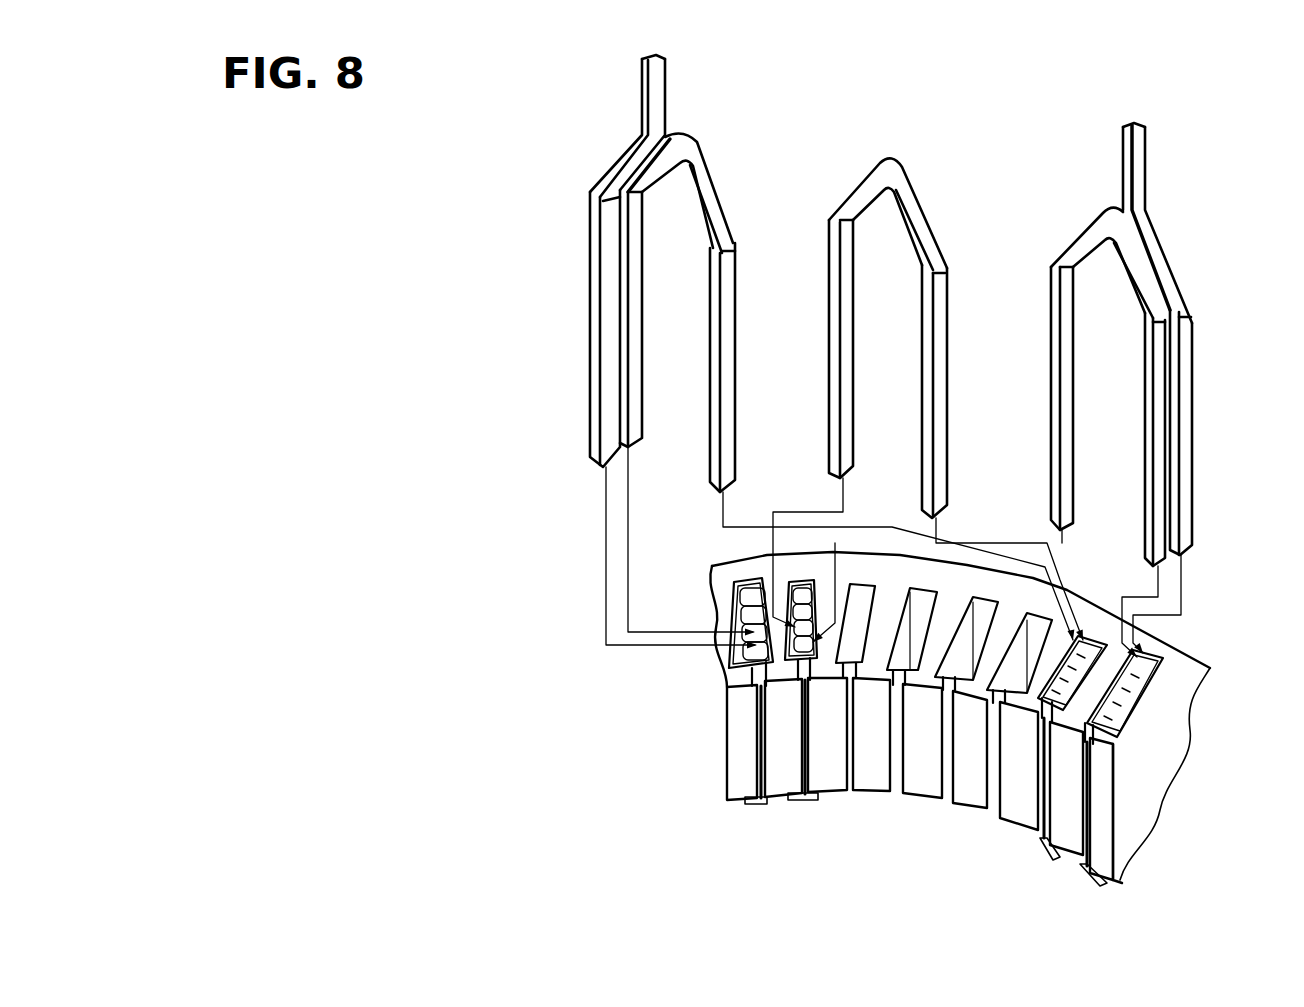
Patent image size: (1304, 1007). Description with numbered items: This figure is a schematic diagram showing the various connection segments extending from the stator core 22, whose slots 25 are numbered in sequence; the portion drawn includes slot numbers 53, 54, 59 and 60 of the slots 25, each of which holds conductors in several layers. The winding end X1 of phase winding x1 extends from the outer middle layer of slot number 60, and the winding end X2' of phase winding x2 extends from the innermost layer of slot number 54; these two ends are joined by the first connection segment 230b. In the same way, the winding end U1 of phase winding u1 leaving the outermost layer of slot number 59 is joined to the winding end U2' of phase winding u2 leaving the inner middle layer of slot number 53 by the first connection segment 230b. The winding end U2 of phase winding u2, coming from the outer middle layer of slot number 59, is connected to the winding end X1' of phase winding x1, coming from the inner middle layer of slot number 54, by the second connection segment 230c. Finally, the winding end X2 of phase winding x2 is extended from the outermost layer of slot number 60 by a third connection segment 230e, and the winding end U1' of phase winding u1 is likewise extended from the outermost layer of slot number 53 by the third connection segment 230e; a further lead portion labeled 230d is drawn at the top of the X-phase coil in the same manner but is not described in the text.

The third connection segment 230e is at (636, 82).
The first connection segment 230b is at (695, 123).
The second connection segment 230c is at (895, 146).
The lead wire (X-phase terminal) 230d is at (1152, 158).
The winding end of phase winding u1 U1 is at (892, 391).
The winding end of phase winding u2 U2 is at (948, 399).
The winding end of phase winding u1 U1' is at (598, 412).
The winding end of phase winding u2 U2' is at (631, 377).
The winding end of phase winding x1 X1 is at (1202, 451).
The winding end of phase winding x2 X2 is at (1183, 425).
The winding end of phase winding x1 X1' is at (820, 369).
The winding end of phase winding x2 X2' is at (1039, 364).
The stator core 22 is at (1183, 662).
The slots 25 is at (757, 722).
The number 53 of the slots 53 is at (767, 773).
The number 54 of the slots 54 is at (803, 765).
The number 59 of the slots 59 is at (1045, 790).
The number 60 of the slots 60 is at (1087, 823).